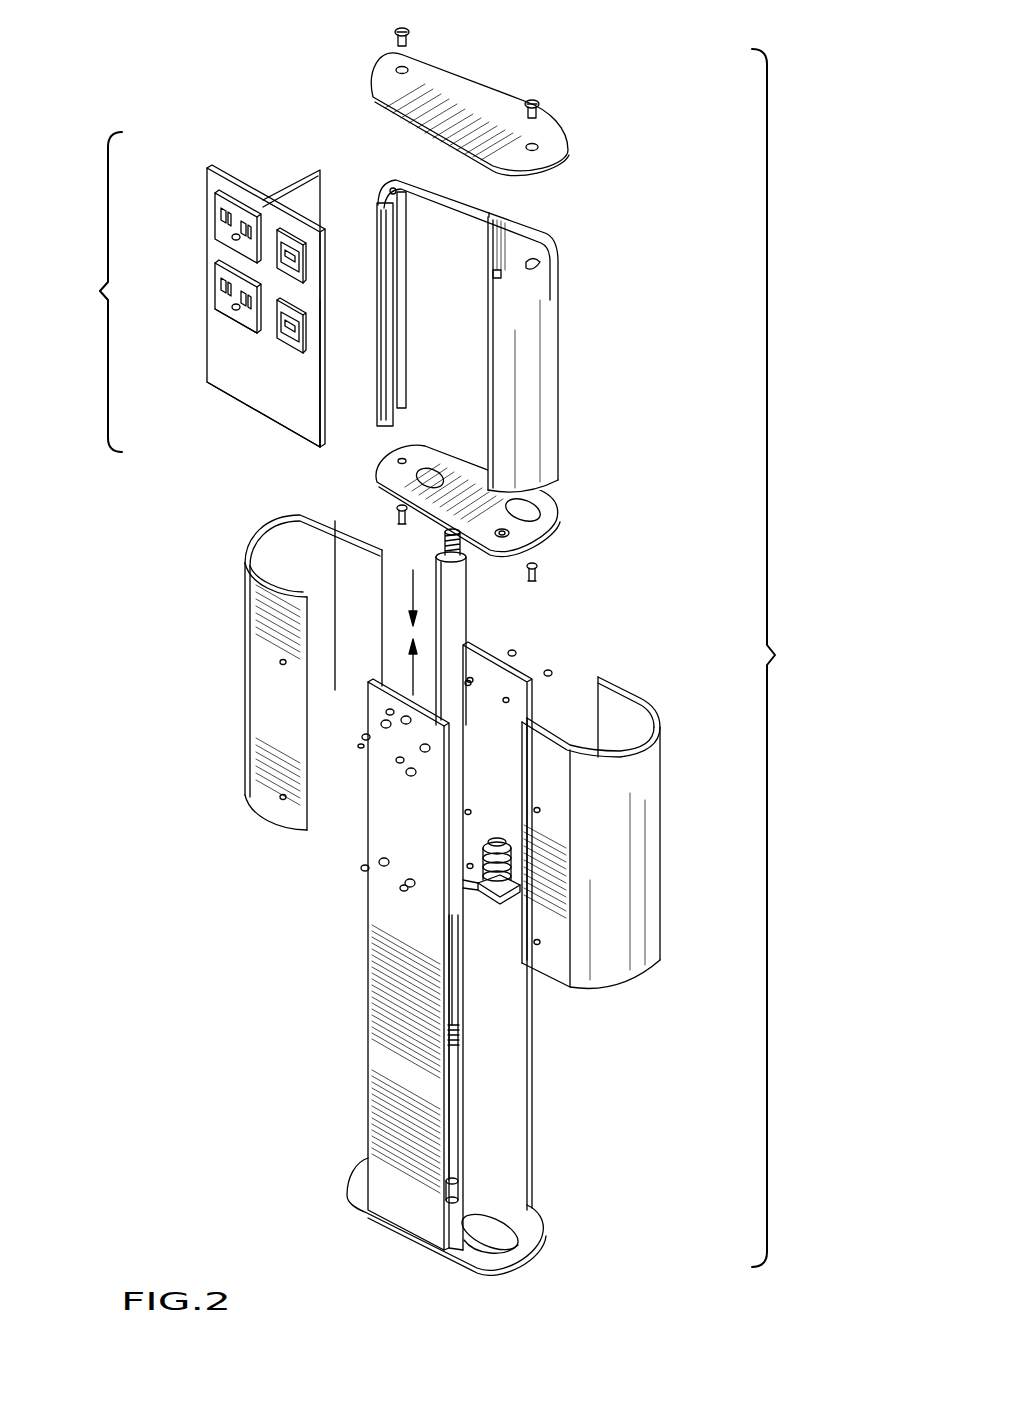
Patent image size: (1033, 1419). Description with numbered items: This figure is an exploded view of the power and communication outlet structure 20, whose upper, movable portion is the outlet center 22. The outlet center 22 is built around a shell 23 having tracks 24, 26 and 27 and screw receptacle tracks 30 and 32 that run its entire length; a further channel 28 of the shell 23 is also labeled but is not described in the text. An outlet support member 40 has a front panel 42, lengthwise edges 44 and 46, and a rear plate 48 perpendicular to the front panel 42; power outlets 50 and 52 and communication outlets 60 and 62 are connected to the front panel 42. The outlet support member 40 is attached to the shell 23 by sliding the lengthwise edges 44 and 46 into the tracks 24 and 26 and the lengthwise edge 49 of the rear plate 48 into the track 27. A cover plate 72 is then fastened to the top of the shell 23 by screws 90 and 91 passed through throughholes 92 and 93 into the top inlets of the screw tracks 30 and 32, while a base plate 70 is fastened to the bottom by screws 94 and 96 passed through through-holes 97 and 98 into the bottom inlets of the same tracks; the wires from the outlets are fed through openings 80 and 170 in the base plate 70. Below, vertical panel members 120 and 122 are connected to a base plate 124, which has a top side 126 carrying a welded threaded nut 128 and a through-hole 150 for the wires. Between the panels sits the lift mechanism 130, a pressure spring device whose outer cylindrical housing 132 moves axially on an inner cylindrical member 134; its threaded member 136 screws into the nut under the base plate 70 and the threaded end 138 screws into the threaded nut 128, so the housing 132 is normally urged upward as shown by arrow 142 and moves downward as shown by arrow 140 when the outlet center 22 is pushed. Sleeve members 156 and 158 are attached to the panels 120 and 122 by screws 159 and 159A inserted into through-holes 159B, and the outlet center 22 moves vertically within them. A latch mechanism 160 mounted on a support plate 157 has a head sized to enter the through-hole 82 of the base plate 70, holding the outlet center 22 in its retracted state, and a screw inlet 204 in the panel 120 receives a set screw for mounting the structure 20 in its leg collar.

The power and communication outlet structure 20 is at (781, 658).
The outlet center 22 is at (93, 292).
The shell 23 is at (560, 380).
The track 24 is at (395, 420).
The track 26 is at (500, 280).
The track 27 is at (490, 215).
The channel 28 is at (405, 225).
The screw receptacle track 30 is at (393, 188).
The screw receptacle track 32 is at (540, 262).
The outlet support member 40 is at (212, 355).
The front panel 42 is at (262, 390).
The lengthwise edge 44 is at (212, 312).
The lengthwise edge 46 is at (323, 330).
The rear plate 48 is at (286, 190).
The lengthwise edge 49 is at (319, 195).
The outlet 50 is at (228, 198).
The outlet 52 is at (212, 283).
The communication outlet 60 is at (300, 272).
The communication outlet 62 is at (296, 318).
The base plate 70 is at (560, 525).
The cover plate 72 is at (543, 111).
The opening 80 is at (426, 478).
The through-hole 82 is at (527, 508).
The screw 90 is at (410, 36).
The screw 91 is at (533, 103).
The throughhole 92 is at (400, 72).
The throughhole 93 is at (540, 147).
The screw 94 is at (398, 514).
The screw 96 is at (537, 572).
The through-hole 97 is at (400, 461).
The through-hole 98 is at (505, 535).
The vertical panel member 120 is at (372, 1052).
The vertical panel member 122 is at (527, 1032).
The base plate 124 is at (545, 1225).
The top side 126 is at (522, 1217).
The threaded nut 128 is at (445, 1198).
The lift mechanism 130 is at (467, 598).
The outer cylindrical housing 132 is at (462, 618).
The inner cylindrical member 134 is at (460, 985).
The threaded member 136 is at (444, 549).
The threaded end 138 is at (460, 1042).
The arrow 140 is at (410, 588).
The arrow 142 is at (410, 682).
The through-hole 150 is at (505, 1240).
The sleeve member 156 is at (248, 655).
The support plate 157 is at (478, 842).
The sleeve member 158 is at (658, 845).
The screw 159 is at (554, 673).
The screw 159A is at (366, 745).
The through-hole 159B is at (468, 690).
The latch mechanism 160 is at (488, 905).
The opening 170 is at (500, 540).
The screw inlet 204 is at (388, 711).